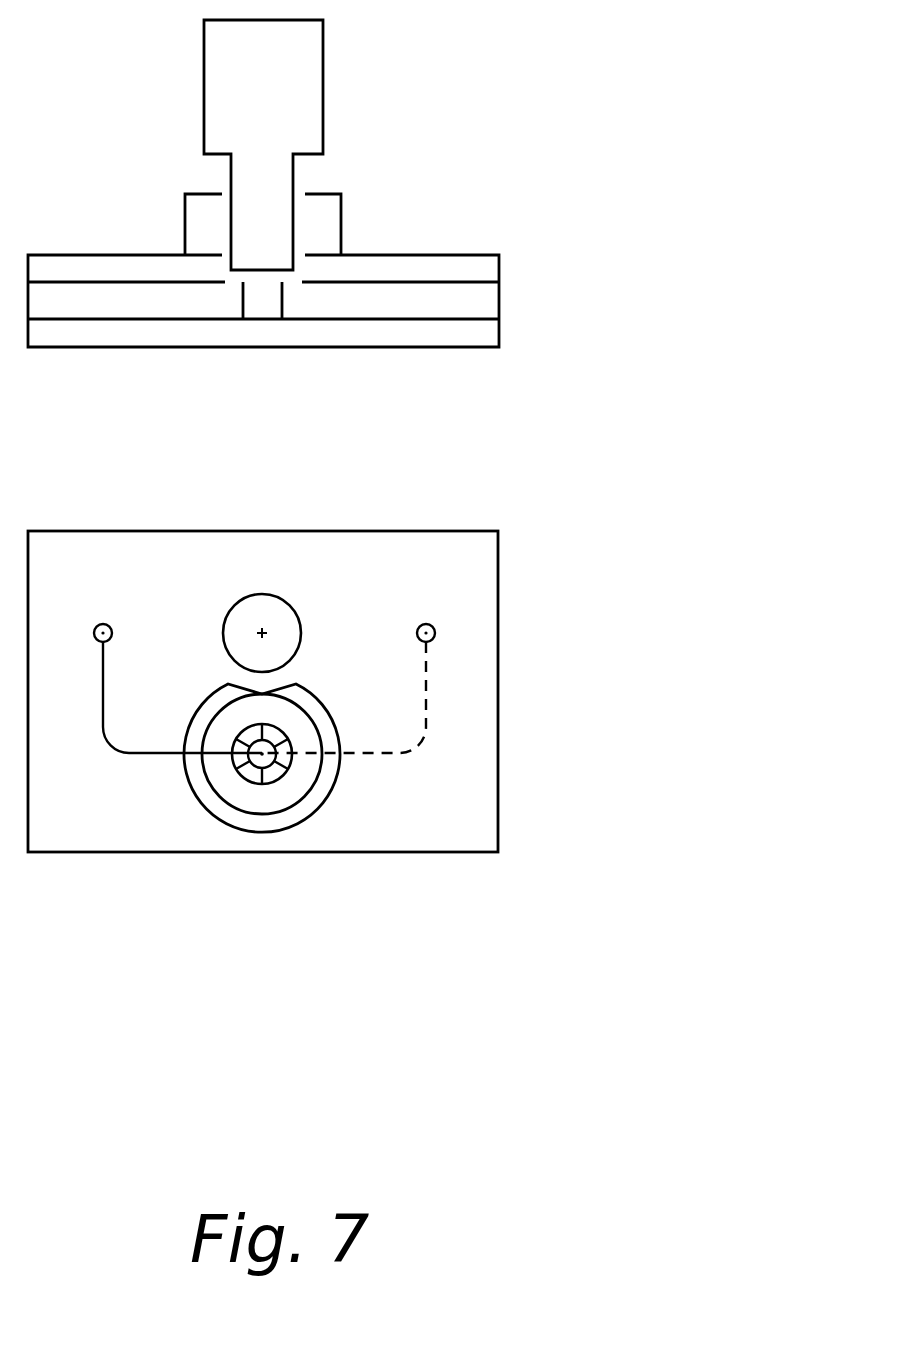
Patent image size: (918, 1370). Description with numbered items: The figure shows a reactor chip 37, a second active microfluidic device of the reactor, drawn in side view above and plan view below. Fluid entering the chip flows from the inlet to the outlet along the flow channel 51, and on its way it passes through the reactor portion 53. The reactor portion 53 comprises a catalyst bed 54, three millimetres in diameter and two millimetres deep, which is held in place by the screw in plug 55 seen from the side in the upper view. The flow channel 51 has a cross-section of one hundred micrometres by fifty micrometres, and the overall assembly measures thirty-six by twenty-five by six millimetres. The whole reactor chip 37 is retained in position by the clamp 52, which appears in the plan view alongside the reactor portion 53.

The reactor chip 37 is at (258, 933).
The flow channel 51 is at (450, 722).
The clamp 52 is at (313, 618).
The reactor portion 53 is at (310, 812).
The catalyst bed 54 is at (295, 302).
The screw in plug 55 is at (353, 125).